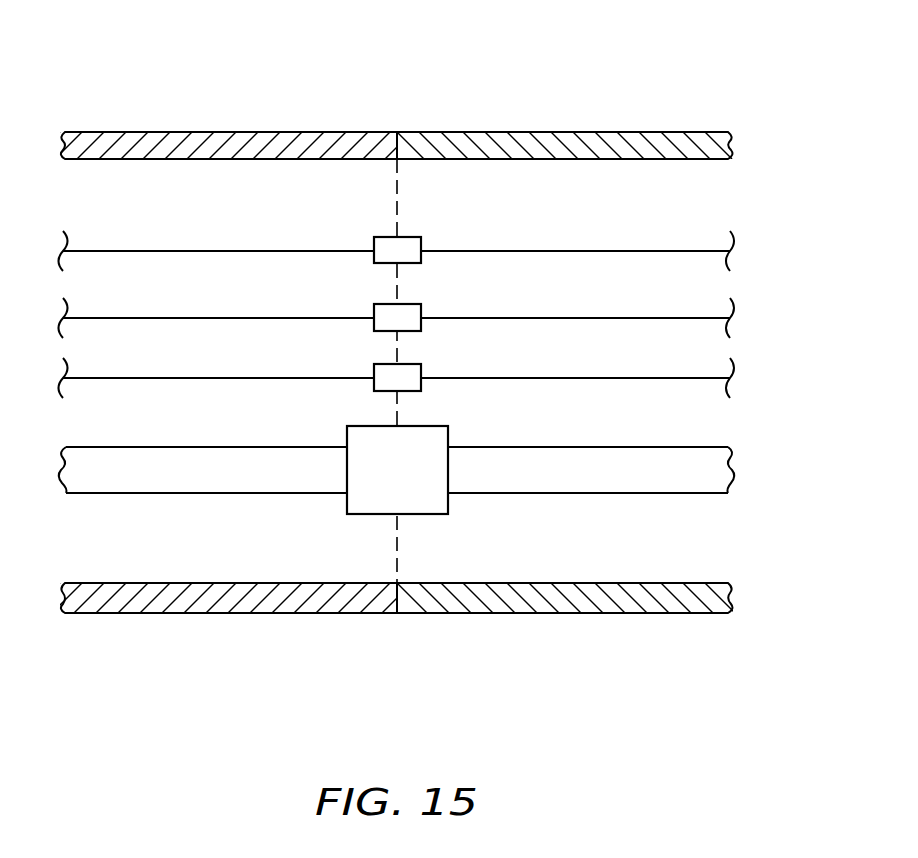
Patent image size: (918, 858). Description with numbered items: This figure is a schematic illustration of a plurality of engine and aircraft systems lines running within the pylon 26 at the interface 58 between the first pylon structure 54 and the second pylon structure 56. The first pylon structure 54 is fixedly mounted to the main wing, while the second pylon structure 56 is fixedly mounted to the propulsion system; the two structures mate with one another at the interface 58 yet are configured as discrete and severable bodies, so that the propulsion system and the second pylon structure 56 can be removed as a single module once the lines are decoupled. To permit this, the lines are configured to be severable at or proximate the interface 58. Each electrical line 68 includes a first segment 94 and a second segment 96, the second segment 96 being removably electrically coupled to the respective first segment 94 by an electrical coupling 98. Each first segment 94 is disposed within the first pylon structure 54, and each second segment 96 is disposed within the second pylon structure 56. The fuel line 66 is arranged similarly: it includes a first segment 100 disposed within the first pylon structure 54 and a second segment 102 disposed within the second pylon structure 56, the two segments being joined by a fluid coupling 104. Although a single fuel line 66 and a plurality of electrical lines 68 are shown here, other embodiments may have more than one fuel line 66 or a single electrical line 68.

The pylon 26 is at (552, 116).
The first segment 94 is at (118, 251).
The second segment 96 is at (577, 251).
The electrical coupling 98 is at (410, 237).
The electrical line 68 is at (216, 250).
The fuel line 66 is at (397, 499).
The first segment 100 is at (168, 493).
The second segment 102 is at (588, 494).
The fluid coupling 104 is at (418, 514).
The first pylon structure 54 is at (185, 615).
The second pylon structure 56 is at (550, 615).
The interface 58 is at (398, 615).